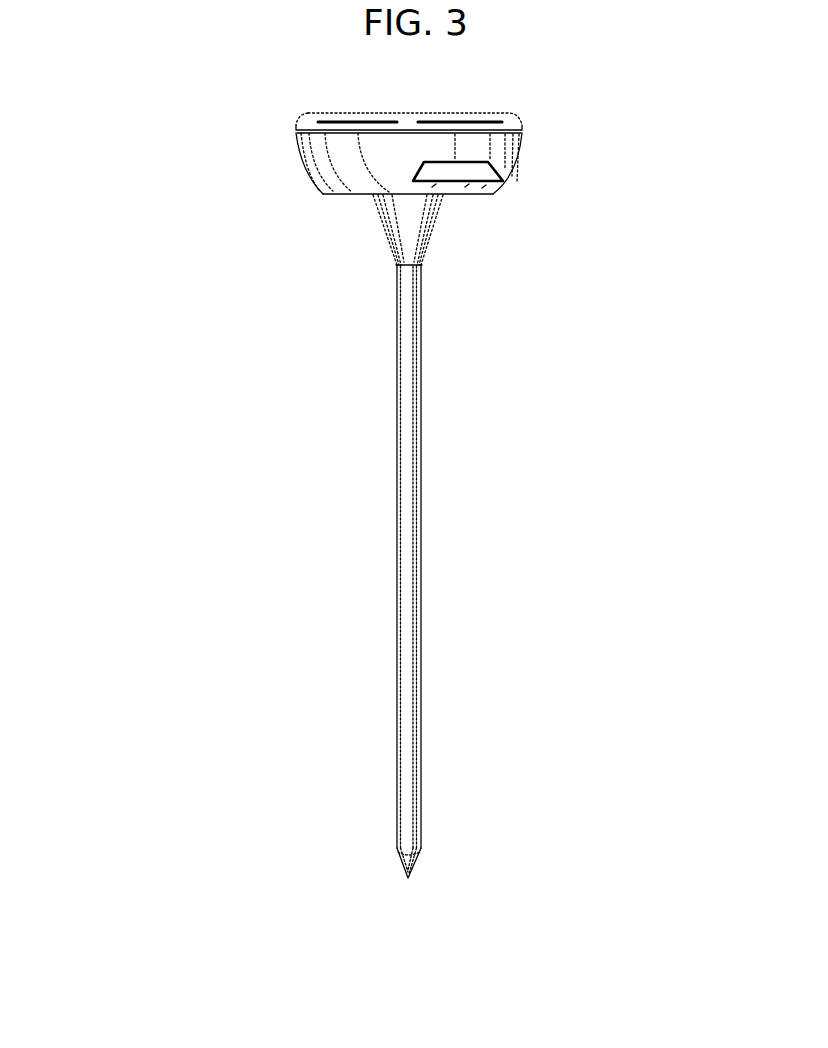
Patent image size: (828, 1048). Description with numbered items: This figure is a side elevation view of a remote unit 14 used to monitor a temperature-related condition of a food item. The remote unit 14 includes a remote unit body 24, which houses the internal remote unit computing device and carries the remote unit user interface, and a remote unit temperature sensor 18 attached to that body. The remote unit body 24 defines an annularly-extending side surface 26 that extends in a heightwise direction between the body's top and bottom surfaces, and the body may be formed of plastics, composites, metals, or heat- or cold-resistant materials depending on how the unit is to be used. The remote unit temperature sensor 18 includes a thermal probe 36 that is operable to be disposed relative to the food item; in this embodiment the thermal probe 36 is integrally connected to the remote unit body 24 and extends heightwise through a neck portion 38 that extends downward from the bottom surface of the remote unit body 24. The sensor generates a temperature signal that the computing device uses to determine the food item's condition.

The remote unit 14 is at (214, 103).
The remote unit temperature sensor 18 is at (413, 872).
The remote unit body 24 is at (510, 113).
The annularly-extending side surface 26 is at (521, 154).
The thermal probe 36 is at (422, 698).
The neck portion 38 is at (434, 240).